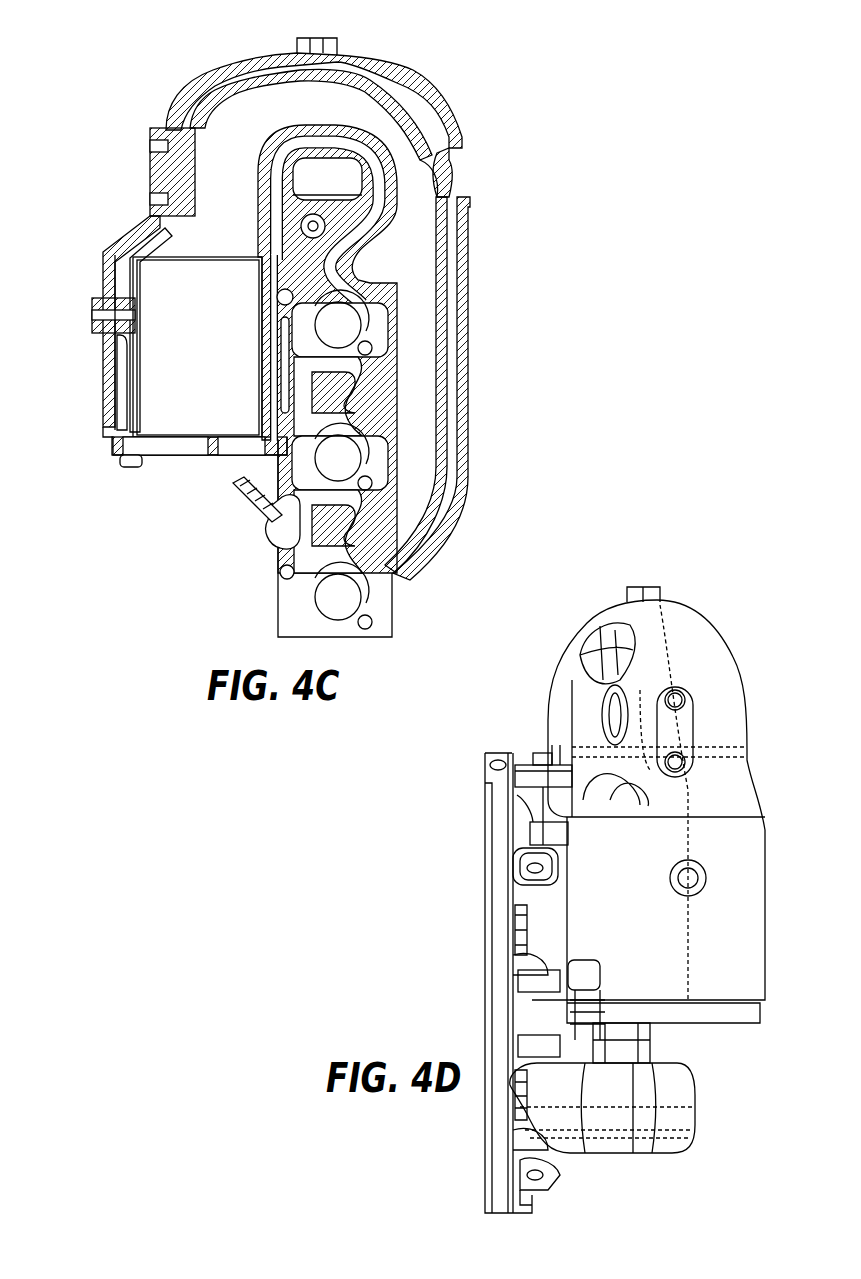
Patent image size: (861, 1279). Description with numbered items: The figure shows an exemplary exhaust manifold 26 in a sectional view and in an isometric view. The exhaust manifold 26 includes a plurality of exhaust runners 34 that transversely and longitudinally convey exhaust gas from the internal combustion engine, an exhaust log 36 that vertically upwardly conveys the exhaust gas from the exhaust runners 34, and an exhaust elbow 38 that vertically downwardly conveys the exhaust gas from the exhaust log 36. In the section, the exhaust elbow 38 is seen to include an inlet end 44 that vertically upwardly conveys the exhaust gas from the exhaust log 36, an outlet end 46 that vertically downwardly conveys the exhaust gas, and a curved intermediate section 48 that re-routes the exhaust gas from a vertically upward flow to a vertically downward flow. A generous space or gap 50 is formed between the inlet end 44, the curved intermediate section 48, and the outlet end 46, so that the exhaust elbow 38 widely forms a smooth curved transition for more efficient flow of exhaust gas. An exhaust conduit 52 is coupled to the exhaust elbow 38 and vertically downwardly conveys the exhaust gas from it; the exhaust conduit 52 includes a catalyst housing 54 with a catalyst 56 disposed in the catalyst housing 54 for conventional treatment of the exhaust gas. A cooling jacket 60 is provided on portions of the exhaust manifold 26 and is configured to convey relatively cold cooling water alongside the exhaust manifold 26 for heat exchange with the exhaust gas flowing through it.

In FIG. 4C, the exhaust manifold 26 is at (468, 73).
In FIG. 4D, the exhaust manifold 26 is at (753, 581).
In FIG. 4C, the exhaust runners 34 is at (341, 273).
In FIG. 4D, the exhaust runners 34 is at (683, 1113).
In FIG. 4C, the exhaust log 36 is at (440, 368).
In FIG. 4C, the exhaust elbow 38 is at (403, 88).
In FIG. 4D, the exhaust elbow 38 is at (620, 610).
In FIG. 4C, the inlet end 44 is at (440, 168).
In FIG. 4C, the outlet end 46 is at (207, 154).
In FIG. 4C, the curved intermediate section 48 is at (266, 115).
In FIG. 4C, the gap 50 is at (340, 180).
In FIG. 4C, the exhaust conduit 52 is at (95, 289).
In FIG. 4D, the exhaust conduit 52 is at (779, 852).
In FIG. 4C, the catalyst housing 54 is at (130, 350).
In FIG. 4D, the catalyst housing 54 is at (746, 940).
In FIG. 4C, the catalyst 56 is at (204, 348).
In FIG. 4C, the cooling jacket 60 is at (470, 449).